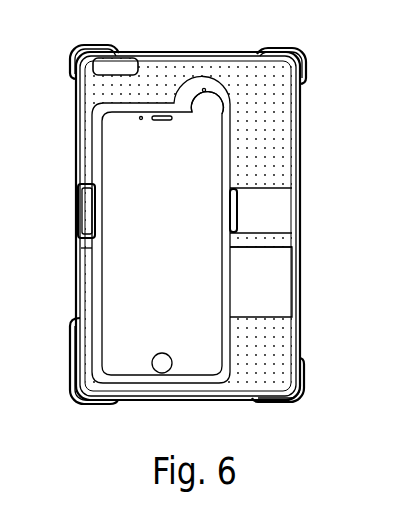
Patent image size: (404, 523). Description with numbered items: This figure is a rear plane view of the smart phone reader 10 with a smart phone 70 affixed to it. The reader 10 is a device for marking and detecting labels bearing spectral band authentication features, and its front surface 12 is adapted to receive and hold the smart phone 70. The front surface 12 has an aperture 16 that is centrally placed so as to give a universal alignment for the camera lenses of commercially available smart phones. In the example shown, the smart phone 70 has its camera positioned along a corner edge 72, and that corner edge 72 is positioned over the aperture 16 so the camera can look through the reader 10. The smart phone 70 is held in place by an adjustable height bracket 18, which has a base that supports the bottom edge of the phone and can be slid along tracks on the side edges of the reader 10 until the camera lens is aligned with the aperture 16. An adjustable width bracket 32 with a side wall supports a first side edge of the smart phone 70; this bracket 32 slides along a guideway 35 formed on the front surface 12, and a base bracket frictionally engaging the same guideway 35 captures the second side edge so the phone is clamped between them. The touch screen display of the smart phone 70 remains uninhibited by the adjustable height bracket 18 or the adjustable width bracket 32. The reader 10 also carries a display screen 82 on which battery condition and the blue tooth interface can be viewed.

The smart phone reader 10 is at (314, 131).
The front surface 12 is at (242, 299).
The aperture 16 is at (216, 104).
The adjustable height bracket 18 is at (305, 368).
The adjustable width bracket 32 is at (72, 210).
The guideway 35 is at (247, 208).
The smart phone 70 is at (72, 369).
The corner edge 72 is at (232, 117).
The display screen 82 is at (68, 58).